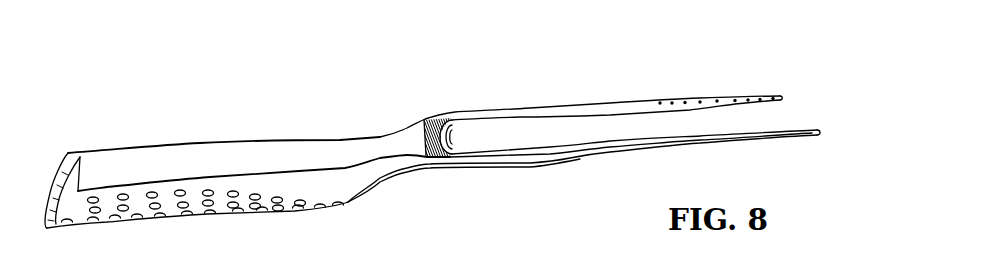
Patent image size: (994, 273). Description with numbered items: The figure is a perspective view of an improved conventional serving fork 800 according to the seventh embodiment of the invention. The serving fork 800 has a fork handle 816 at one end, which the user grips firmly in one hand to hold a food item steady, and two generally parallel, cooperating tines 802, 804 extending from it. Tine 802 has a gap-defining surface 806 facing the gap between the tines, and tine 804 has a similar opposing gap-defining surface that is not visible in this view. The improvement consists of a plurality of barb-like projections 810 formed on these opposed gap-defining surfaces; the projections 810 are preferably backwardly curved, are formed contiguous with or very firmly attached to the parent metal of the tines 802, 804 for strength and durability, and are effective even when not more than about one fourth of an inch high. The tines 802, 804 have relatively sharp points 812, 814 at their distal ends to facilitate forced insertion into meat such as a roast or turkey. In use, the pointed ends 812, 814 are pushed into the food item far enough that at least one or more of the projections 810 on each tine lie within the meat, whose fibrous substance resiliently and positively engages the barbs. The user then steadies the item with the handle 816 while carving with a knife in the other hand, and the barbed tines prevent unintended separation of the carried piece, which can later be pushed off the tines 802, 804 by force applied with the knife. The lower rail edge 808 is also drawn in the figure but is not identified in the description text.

The serving fork 800 is at (371, 216).
The tine 802 is at (541, 106).
The tine 804 is at (561, 153).
The gap-defining surface 806 is at (631, 105).
The inner surface of second arm 808 is at (628, 127).
The barb-like projections 810 is at (733, 104).
The sharp point 812 is at (785, 97).
The sharp point 814 is at (818, 132).
The fork handle 816 is at (207, 167).